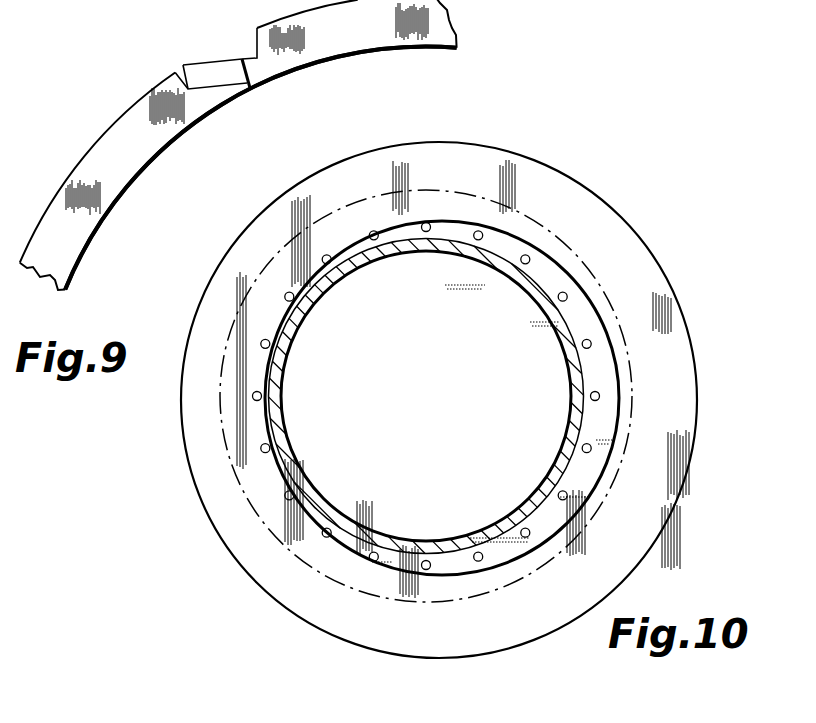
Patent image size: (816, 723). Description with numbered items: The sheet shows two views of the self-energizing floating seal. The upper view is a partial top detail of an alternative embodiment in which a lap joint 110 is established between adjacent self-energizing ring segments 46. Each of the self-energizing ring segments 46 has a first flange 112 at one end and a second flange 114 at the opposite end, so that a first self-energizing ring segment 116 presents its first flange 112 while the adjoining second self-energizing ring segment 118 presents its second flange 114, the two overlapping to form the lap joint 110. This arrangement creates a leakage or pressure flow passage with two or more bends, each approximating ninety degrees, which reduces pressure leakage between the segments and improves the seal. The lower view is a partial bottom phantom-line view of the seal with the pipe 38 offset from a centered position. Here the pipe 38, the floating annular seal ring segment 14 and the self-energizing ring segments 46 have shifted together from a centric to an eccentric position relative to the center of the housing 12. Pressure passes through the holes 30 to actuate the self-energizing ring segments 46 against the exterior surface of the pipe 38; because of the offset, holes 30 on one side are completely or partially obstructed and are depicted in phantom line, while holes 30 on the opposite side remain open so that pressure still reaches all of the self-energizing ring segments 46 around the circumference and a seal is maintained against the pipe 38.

In FIG. 10, the housing 12 is at (190, 430).
In FIG. 10, the floating annular seal ring segment 14 is at (590, 322).
In FIG. 10, the holes 30 is at (261, 343).
In FIG. 10, the pipe 38 is at (293, 473).
In FIG. 9, the self-energizing ring segments 46 is at (172, 150).
In FIG. 9, the lap joint 110 is at (146, 73).
In FIG. 9, the first flange 112 is at (208, 60).
In FIG. 9, the second flange 114 is at (222, 83).
In FIG. 9, the first self-energizing ring segment 116 is at (362, 38).
In FIG. 9, the second self-energizing ring segment 118 is at (148, 142).